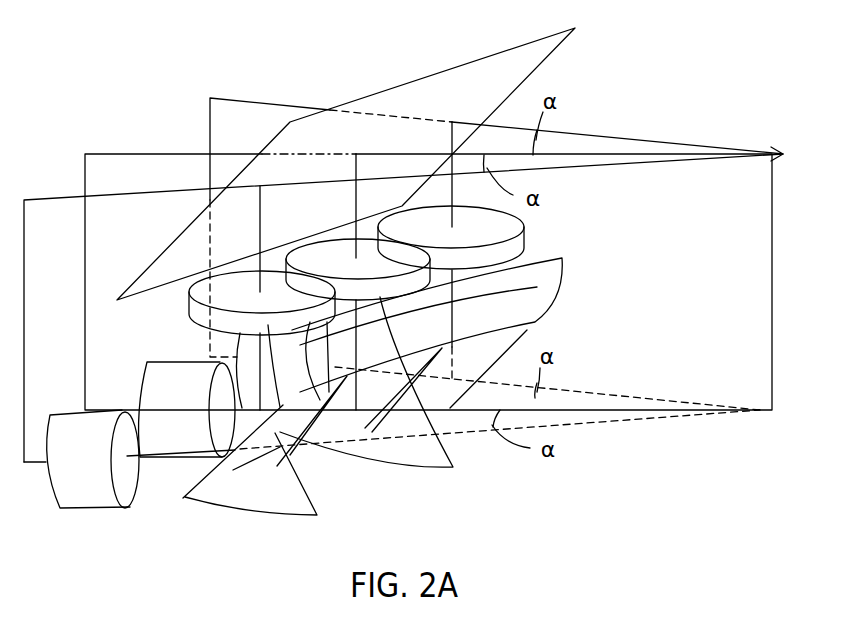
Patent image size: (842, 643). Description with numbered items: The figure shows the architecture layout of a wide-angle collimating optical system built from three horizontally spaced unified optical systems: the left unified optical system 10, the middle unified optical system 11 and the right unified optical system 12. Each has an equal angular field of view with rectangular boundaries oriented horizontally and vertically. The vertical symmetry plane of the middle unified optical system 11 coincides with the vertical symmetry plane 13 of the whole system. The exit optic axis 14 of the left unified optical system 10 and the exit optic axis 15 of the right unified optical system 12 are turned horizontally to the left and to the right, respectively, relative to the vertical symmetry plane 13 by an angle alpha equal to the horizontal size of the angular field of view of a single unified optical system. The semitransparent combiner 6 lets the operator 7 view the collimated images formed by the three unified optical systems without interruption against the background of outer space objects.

The semitransparent combiner 6 is at (473, 88).
The operator 7 is at (768, 150).
The left unified optical system 10 is at (271, 459).
The middle unified optical system 11 is at (403, 393).
The right unified optical system 12 is at (566, 260).
The vertical symmetry plane 13 is at (158, 163).
The exit optic axis of the left unified optical system 14 is at (63, 213).
The exit optic axis of the right unified optical system 15 is at (248, 113).